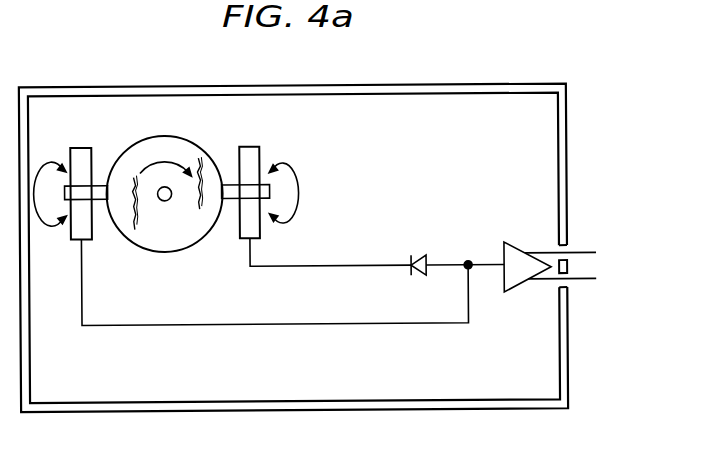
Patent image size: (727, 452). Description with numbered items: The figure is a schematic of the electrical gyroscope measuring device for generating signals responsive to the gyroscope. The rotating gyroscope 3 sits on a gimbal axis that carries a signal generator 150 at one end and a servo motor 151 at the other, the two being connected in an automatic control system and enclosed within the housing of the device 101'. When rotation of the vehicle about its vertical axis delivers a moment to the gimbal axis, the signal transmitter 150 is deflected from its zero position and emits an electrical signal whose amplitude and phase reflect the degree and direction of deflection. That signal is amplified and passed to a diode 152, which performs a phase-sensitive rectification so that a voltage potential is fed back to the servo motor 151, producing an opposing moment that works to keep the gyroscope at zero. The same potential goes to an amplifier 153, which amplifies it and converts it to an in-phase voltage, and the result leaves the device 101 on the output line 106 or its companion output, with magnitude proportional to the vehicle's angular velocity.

The rotor 3 is at (176, 241).
The signal generator 150 is at (251, 146).
The servo motor 151 is at (82, 146).
The diode 152 is at (413, 254).
The amplifier 153 is at (513, 242).
The output line 106 is at (582, 253).
The device 101 is at (565, 302).
The housing 101' is at (293, 263).